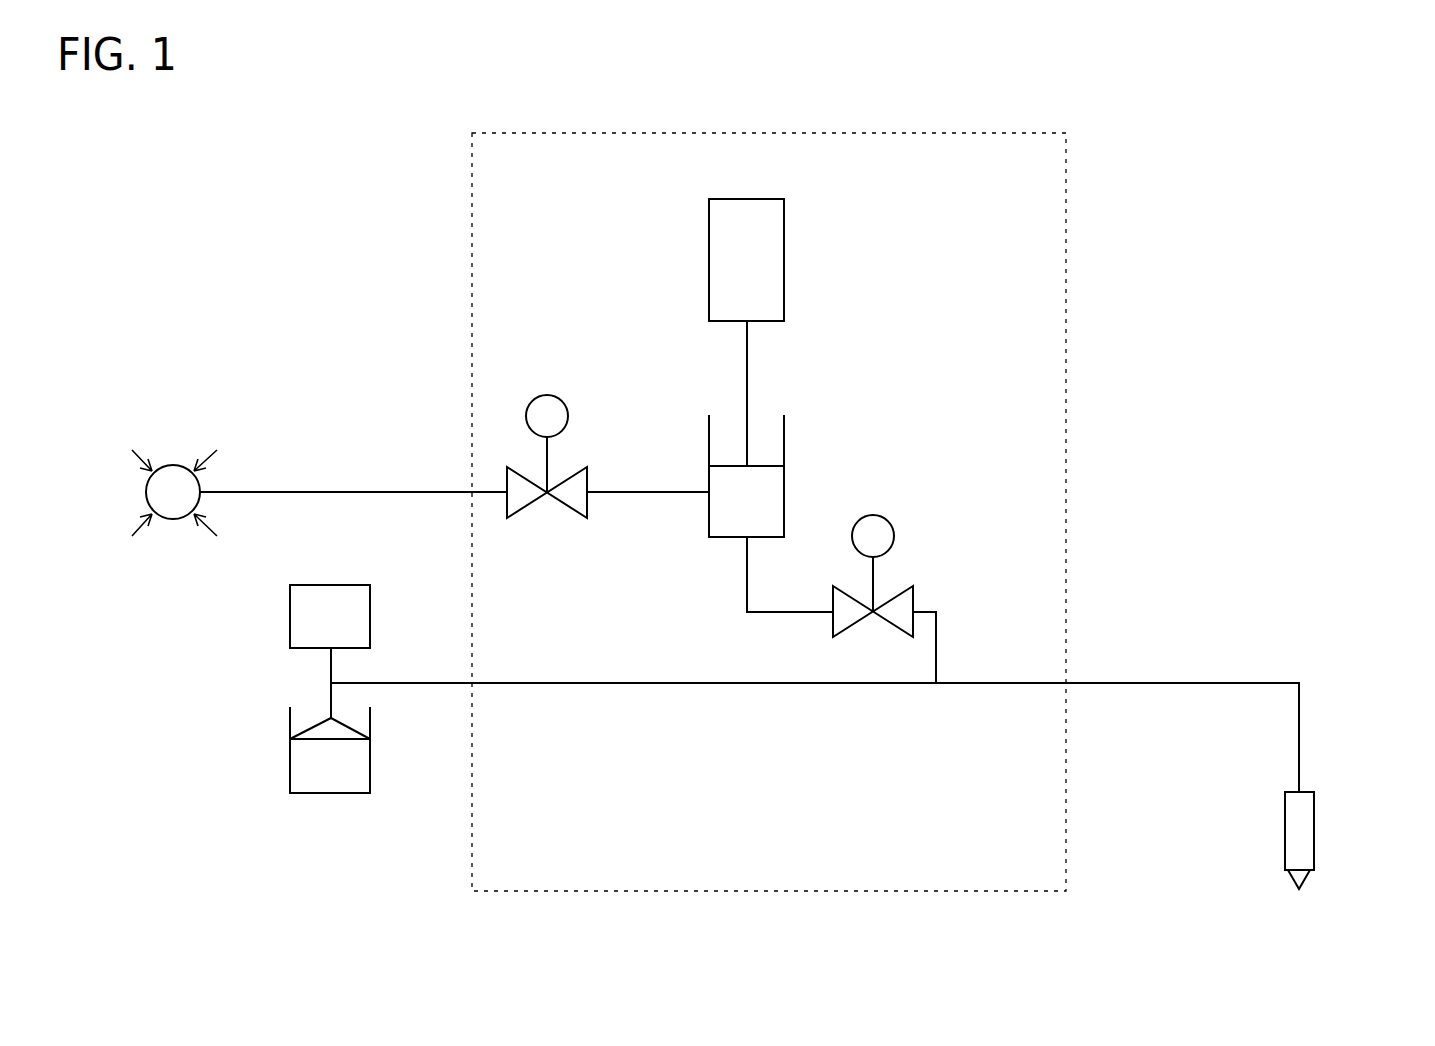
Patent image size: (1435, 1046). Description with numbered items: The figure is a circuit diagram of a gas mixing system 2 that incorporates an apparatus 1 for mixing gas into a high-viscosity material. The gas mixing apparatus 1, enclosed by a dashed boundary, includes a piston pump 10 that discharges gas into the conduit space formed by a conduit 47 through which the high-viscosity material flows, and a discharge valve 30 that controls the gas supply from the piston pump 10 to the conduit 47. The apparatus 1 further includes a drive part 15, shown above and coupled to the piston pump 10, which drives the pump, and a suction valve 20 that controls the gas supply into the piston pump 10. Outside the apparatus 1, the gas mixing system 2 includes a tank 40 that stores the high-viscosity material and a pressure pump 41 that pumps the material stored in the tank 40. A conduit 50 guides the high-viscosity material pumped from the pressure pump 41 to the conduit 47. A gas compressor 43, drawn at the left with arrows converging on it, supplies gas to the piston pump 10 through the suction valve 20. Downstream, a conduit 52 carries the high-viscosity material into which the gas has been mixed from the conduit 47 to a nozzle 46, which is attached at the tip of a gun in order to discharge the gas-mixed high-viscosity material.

The apparatus for mixing gas into high-viscosity material 1 is at (1068, 326).
The gas mixing system 2 is at (1196, 422).
The piston pump 10 is at (784, 435).
The drive part 15 is at (784, 256).
The suction valve 20 is at (543, 395).
The discharge valve 30 is at (873, 515).
The tank 40 is at (290, 774).
The pressure pump 41 is at (290, 620).
The gas compressor 43 is at (173, 466).
The nozzle 46 is at (1314, 828).
The conduit 47 is at (787, 685).
The conduit 50 is at (415, 685).
The conduit 52 is at (1178, 685).